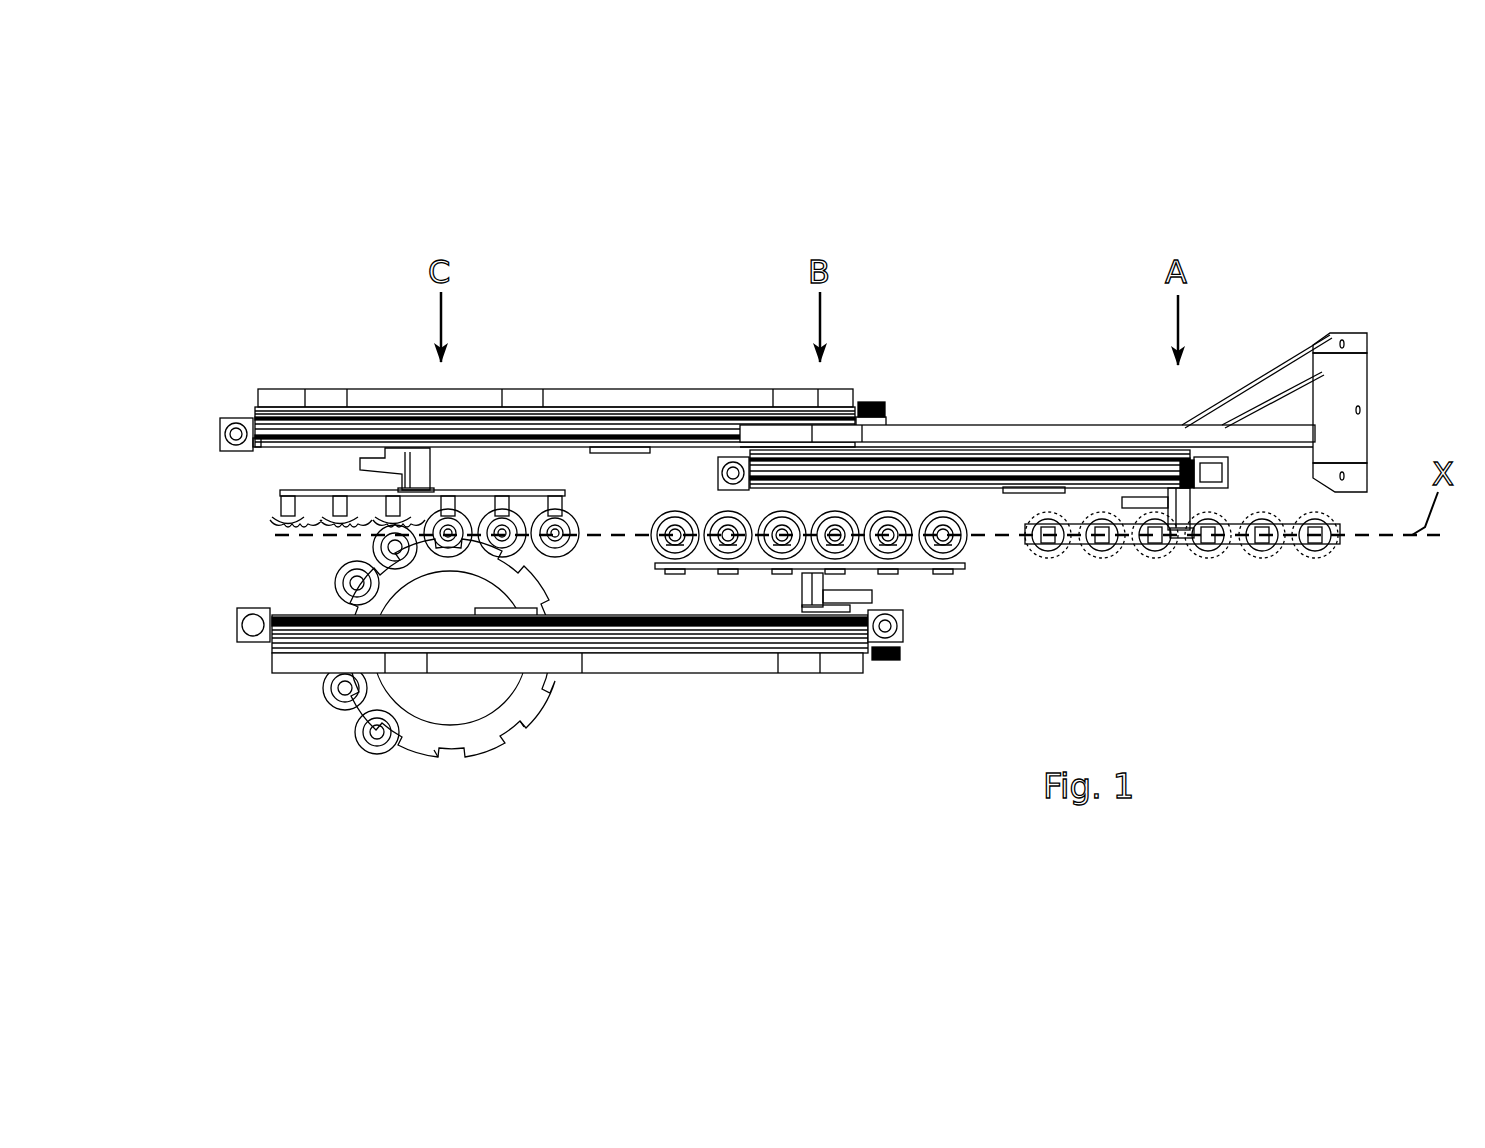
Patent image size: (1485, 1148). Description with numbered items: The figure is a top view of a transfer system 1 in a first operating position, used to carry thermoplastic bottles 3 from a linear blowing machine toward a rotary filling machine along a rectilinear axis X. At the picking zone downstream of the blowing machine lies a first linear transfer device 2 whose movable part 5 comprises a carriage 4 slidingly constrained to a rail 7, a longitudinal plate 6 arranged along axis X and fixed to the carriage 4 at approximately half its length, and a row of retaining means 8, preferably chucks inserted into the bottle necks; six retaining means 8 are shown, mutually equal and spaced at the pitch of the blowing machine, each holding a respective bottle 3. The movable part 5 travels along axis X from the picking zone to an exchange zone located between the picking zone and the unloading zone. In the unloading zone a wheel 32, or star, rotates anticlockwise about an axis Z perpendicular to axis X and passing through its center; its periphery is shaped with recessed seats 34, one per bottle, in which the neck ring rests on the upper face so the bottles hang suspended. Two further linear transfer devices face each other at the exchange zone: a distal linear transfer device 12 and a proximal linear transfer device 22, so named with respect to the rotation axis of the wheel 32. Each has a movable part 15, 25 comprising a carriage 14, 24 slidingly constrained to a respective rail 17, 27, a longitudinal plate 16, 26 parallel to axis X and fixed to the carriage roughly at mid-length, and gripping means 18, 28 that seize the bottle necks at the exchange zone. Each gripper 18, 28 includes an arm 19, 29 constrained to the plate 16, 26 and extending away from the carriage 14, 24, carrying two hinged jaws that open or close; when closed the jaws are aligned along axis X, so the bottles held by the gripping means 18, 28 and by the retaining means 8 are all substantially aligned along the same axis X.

The transfer system 1 is at (352, 268).
The first linear transfer device 2 is at (952, 352).
The bottle 3 is at (1262, 549).
The carriage 4 is at (1165, 505).
The movable part 5 is at (1306, 592).
The longitudinal plate 6 is at (1128, 547).
The rail 7 is at (996, 455).
The retaining means 8 is at (1260, 541).
The distal linear transfer device 12 is at (226, 381).
The carriage 14 is at (400, 464).
The movable part 15 is at (588, 496).
The longitudinal plate 16 is at (283, 494).
The gripping means 18 is at (283, 519).
The arm 19 is at (283, 506).
The rail 17 is at (599, 418).
The proximal linear transfer device 22 is at (896, 704).
The carriage 24 is at (826, 592).
The movable part 25 is at (975, 586).
The longitudinal plate 26 is at (914, 568).
The rail 27 is at (661, 643).
The gripping means 28 is at (890, 542).
The arm 29 is at (672, 546).
The wheel 32 is at (296, 765).
The seat 34 is at (530, 724).